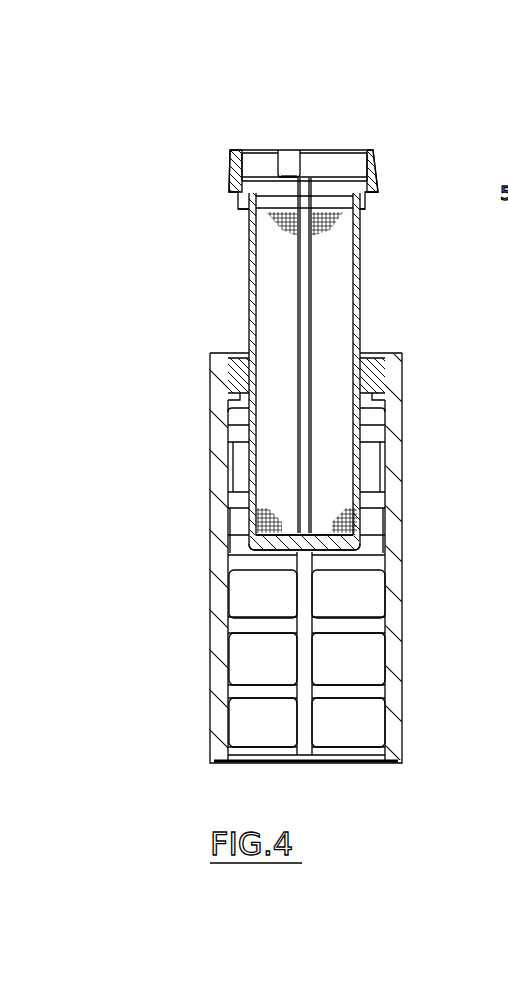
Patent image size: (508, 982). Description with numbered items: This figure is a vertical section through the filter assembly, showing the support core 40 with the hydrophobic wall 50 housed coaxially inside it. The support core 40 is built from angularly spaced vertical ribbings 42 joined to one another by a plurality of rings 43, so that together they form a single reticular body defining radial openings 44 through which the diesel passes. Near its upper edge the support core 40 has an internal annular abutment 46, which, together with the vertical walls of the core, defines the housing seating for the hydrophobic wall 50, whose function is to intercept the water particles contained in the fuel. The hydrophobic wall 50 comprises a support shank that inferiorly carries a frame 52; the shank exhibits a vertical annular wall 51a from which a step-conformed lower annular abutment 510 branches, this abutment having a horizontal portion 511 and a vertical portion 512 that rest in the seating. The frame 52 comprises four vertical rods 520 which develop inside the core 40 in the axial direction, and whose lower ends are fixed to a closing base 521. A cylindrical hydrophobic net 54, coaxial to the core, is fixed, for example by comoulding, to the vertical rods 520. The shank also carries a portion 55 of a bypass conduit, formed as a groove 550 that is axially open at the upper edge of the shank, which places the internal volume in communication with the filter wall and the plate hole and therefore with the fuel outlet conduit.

The hydrophobic wall 50 is at (226, 164).
The vertical annular wall 51a is at (378, 170).
The portion of a bypass conduit 55 is at (283, 148).
The groove 550 is at (291, 158).
The horizontal portion 511 is at (237, 197).
The lower annular abutment 510 is at (236, 203).
The vertical portion 512 is at (243, 210).
The frame 52 is at (366, 268).
The vertical rods 520 is at (360, 300).
The closing base 521 is at (245, 551).
The hydrophobic net 54 is at (292, 329).
The support core 40 is at (214, 583).
The vertical ribbings 42 is at (395, 670).
The internal annular abutment 46 is at (230, 380).
The rings 43 is at (237, 490).
The radial openings 44 is at (360, 605).